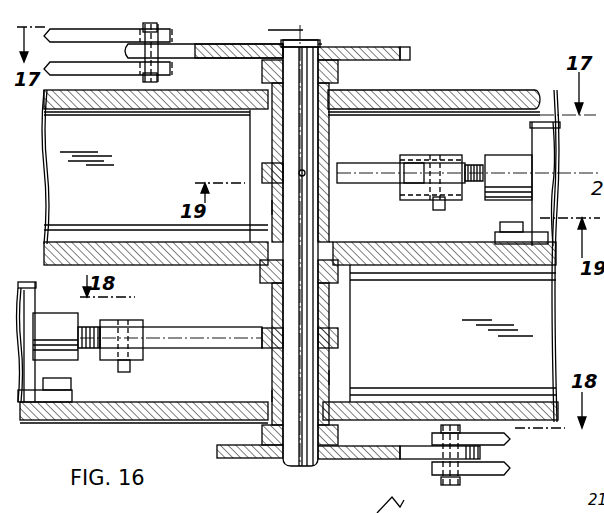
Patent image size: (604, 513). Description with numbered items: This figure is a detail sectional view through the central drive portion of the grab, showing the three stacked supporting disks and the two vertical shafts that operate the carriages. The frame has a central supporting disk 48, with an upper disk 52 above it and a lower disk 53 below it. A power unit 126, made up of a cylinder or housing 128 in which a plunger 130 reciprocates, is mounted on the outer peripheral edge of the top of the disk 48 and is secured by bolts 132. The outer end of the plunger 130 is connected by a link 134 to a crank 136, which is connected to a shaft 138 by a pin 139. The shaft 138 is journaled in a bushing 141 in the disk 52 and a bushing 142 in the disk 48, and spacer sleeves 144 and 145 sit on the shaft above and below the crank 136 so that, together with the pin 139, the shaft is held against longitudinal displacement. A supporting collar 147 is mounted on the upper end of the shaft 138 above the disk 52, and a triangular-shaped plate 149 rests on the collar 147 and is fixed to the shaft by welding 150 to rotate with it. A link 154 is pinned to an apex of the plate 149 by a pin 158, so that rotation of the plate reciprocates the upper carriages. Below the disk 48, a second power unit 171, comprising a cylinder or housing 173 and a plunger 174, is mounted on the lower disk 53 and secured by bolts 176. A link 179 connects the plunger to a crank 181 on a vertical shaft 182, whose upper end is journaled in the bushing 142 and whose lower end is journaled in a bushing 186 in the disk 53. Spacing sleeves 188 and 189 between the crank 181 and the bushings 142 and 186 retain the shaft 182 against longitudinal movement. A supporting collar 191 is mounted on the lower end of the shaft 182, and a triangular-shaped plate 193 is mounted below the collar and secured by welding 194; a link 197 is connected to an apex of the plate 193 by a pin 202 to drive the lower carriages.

The upper disk 52 is at (464, 96).
The central supporting plate or disk 48 is at (115, 242).
The lower disk 53 is at (101, 412).
The shaft 182 is at (297, 460).
The shaft 138 is at (316, 46).
The welding 150 is at (322, 44).
The link 154 is at (110, 37).
The pin 158 is at (160, 27).
The triangular-shaped plate 149 is at (405, 60).
The bushing 141 is at (271, 80).
The supporting collar 147 is at (339, 72).
The crank 136 is at (262, 167).
The pin 139 is at (300, 171).
The spacer sleeve 145 is at (271, 209).
The bushing 142 is at (340, 245).
The link 134 is at (390, 163).
The spacer sleeve 144 is at (337, 148).
The plunger 130 is at (468, 165).
The cylinder or housing 128 is at (541, 143).
The power unit 126 is at (549, 112).
The bolts 132 is at (499, 231).
The power unit 171 is at (32, 322).
The cylinder or housing 173 is at (34, 302).
The plunger 174 is at (89, 328).
The link 179 is at (179, 320).
The bolts 176 is at (69, 381).
The spacing sleeve 188 is at (329, 300).
The crank 181 is at (339, 339).
The spacing sleeve 189 is at (329, 378).
The bushing 186 is at (271, 400).
The supporting collar 191 is at (261, 436).
The triangular-shaped plate 193 is at (246, 458).
The welding 194 is at (322, 460).
The link 197 is at (501, 465).
The pin 202 is at (456, 486).